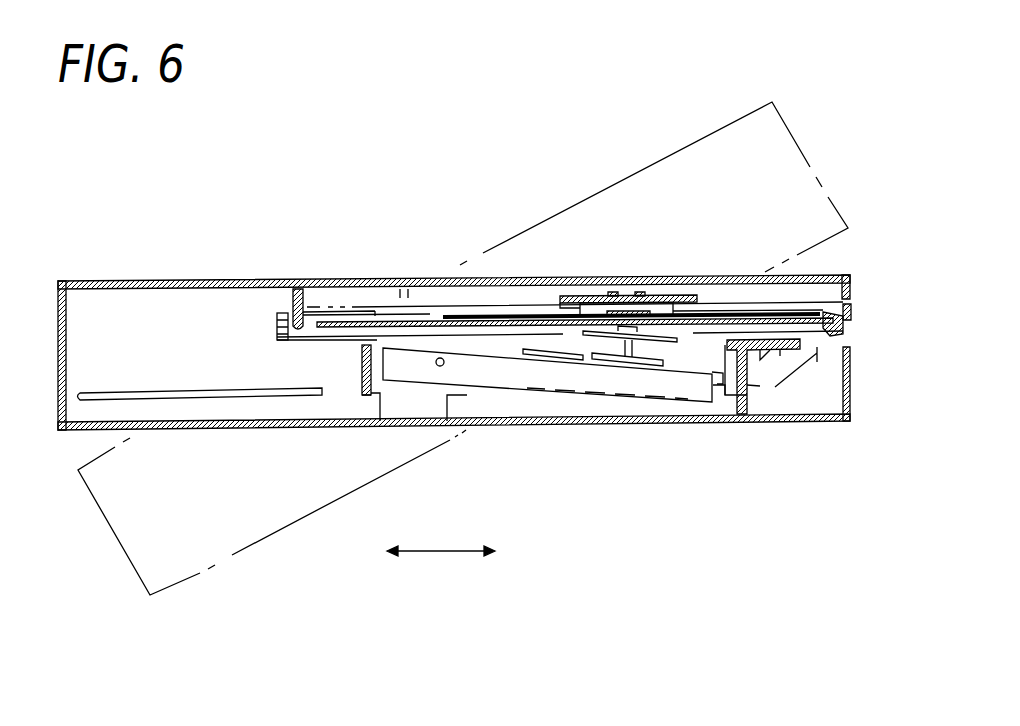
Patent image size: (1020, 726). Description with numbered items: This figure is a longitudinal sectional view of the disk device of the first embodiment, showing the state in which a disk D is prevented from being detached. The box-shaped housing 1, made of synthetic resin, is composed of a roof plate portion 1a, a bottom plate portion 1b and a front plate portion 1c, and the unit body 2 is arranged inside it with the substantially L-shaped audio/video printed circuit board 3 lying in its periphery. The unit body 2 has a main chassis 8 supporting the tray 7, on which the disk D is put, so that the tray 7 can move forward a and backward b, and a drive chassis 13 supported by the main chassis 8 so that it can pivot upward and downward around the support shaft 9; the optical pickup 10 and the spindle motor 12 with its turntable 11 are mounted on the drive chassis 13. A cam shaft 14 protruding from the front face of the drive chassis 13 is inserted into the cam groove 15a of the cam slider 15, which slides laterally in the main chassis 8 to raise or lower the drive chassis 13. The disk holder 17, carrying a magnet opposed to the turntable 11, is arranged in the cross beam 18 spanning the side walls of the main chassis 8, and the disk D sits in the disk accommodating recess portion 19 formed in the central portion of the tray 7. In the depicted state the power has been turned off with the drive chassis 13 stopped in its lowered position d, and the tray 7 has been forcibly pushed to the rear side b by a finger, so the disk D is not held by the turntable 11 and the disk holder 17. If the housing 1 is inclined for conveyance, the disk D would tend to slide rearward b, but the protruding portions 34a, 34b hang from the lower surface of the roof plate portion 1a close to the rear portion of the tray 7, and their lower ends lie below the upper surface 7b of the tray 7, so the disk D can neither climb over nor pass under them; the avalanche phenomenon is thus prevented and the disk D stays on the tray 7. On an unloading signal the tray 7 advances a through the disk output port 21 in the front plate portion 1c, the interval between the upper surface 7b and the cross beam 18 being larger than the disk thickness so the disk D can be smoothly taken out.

The housing 1 is at (479, 339).
The roof plate portion 1a is at (138, 281).
The bottom plate portion 1b is at (242, 431).
The front plate portion 1c is at (851, 375).
The unit body 2 is at (242, 306).
The audio/video printed circuit board 3 is at (128, 392).
The tray 7 is at (262, 328).
The upper surface of the tray 7b is at (382, 305).
The main chassis 8 is at (350, 365).
The support shaft 9 is at (437, 367).
The optical pickup 10 is at (540, 358).
The turntable 11 is at (590, 360).
The spindle motor 12 is at (618, 358).
The drive chassis 13 is at (692, 392).
The cam shaft 14 is at (712, 386).
The cam slider 15 is at (773, 407).
The cam groove 15a is at (748, 388).
The disk holder 17 is at (632, 294).
The cross beam 18 is at (552, 298).
The disk accommodating recess portion 19 is at (826, 333).
The disk output port 21 is at (851, 304).
The protruding portion 34a is at (405, 290).
The protruding portion 34b is at (298, 289).
The disk D is at (740, 318).
The forward direction a is at (501, 553).
The rear direction b is at (425, 553).
The downward direction d is at (468, 403).